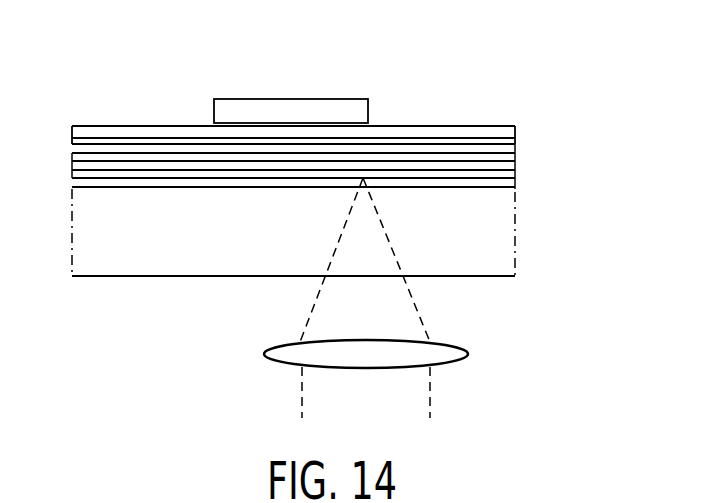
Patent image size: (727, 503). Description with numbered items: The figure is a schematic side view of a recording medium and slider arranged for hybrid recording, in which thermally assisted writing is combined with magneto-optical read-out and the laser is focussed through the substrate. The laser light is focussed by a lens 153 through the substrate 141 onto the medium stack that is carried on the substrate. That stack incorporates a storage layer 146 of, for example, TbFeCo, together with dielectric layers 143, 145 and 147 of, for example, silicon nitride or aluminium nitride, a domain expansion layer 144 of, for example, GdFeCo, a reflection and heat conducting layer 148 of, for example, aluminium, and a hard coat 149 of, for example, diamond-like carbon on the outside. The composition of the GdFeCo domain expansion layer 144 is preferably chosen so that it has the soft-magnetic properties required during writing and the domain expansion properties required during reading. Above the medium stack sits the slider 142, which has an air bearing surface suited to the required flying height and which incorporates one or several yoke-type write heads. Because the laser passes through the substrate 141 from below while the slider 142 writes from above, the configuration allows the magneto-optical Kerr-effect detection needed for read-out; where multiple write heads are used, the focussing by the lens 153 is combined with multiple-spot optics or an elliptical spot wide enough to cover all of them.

The substrate 141 is at (507, 252).
The slider 142 is at (350, 112).
The dielectric layer 143 is at (505, 183).
The domain expansion layer 144 is at (505, 173).
The dielectric layer 145 is at (507, 163).
The storage layer 146 is at (515, 155).
The dielectric layer 147 is at (498, 146).
The reflection and heat conducting layer 148 is at (462, 140).
The hard coat 149 is at (440, 130).
The lens 153 is at (468, 352).